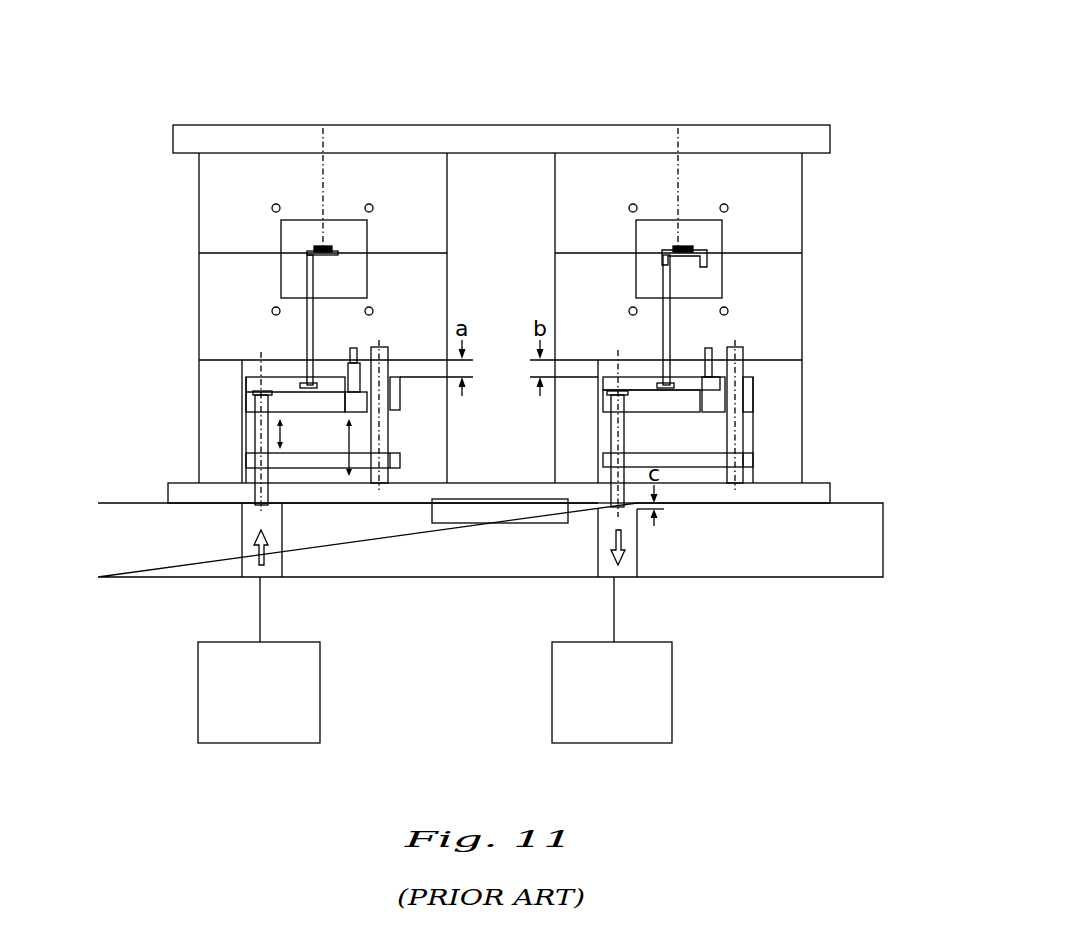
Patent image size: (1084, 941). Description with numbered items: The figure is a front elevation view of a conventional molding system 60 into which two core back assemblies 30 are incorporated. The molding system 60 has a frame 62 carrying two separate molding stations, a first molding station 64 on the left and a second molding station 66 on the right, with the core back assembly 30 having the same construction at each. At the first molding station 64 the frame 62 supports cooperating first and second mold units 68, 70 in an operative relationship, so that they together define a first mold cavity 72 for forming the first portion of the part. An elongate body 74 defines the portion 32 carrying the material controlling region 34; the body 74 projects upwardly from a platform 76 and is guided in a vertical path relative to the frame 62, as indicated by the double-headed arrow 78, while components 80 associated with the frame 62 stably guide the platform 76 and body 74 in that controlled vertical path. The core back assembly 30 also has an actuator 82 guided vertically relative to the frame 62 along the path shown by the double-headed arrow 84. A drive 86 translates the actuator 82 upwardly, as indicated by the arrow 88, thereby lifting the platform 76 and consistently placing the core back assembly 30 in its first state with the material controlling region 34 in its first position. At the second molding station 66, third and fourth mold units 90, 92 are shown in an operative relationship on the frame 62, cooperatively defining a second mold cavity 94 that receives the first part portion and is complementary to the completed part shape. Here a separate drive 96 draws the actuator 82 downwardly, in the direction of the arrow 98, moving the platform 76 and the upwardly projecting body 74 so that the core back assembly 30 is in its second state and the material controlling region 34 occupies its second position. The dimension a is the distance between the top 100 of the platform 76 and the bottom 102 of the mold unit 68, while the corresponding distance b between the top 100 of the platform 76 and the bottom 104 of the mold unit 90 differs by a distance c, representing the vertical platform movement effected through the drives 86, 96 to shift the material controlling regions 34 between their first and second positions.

The core back assembly 30 is at (288, 326).
The portion 32 is at (306, 276).
The material controlling region 34 is at (319, 246).
The molding system 60 is at (555, 94).
The frame 62 is at (512, 556).
The first molding station 64 is at (406, 204).
The second molding station 66 is at (758, 169).
The first mold unit 68 is at (432, 314).
The second mold unit 70 is at (438, 229).
The first mold cavity 72 is at (323, 258).
The elongate body 74 is at (313, 325).
The platform 76 is at (293, 386).
The double-headed arrow 78 is at (352, 437).
The components 80 is at (380, 425).
The actuator 82 is at (258, 492).
The double-headed arrow 84 is at (257, 429).
The drive 86 is at (259, 660).
The arrow 88 is at (254, 551).
The third mold unit 90 is at (788, 289).
The fourth mold unit 92 is at (794, 210).
The second mold cavity 94 is at (696, 270).
The drive 96 is at (612, 660).
The arrow 98 is at (627, 549).
The top of the platform 100 is at (276, 378).
The bottom of the mold unit 102 is at (251, 360).
The bottom of the mold unit 104 is at (589, 362).